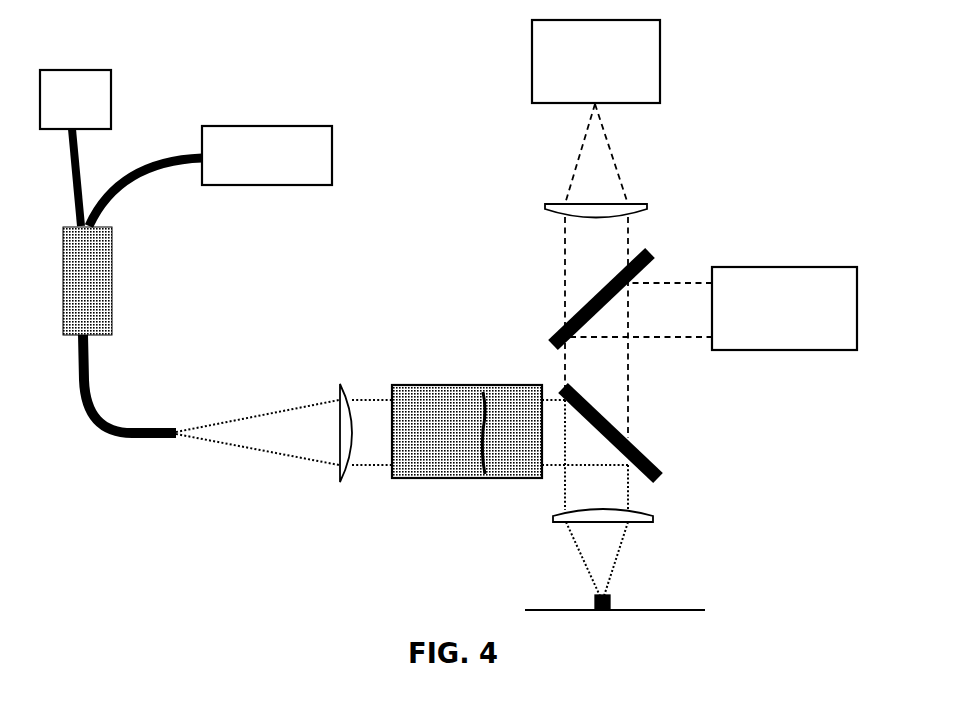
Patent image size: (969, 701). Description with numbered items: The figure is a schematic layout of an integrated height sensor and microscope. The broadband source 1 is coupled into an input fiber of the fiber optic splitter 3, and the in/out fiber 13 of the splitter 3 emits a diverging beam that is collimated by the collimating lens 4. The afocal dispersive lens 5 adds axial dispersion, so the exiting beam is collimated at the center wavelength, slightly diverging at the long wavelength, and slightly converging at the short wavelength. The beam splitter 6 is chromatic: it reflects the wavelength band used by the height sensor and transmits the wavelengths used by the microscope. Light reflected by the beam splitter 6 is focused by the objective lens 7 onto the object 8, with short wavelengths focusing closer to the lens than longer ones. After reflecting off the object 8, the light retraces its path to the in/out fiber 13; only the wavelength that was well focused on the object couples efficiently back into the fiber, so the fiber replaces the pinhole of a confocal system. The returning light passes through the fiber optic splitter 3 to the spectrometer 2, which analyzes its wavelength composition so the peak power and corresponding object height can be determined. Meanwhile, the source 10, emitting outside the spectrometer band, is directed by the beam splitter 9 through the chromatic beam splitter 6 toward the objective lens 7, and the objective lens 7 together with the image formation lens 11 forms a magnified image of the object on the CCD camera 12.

The broadband source 1 is at (75, 136).
The spectrometer 2 is at (210, 163).
The fiber optic splitter 3 is at (76, 281).
The collimating lens 4 is at (346, 419).
The afocal dispersive lens 5 is at (467, 420).
The beam splitter 6 is at (613, 433).
The objective lens 7 is at (617, 524).
The object 8 is at (615, 603).
The beam splitter 9 is at (601, 299).
The source 10 is at (784, 298).
The image formation lens 11 is at (579, 207).
The CCD camera 12 is at (584, 61).
The in/out fiber 13 is at (129, 384).